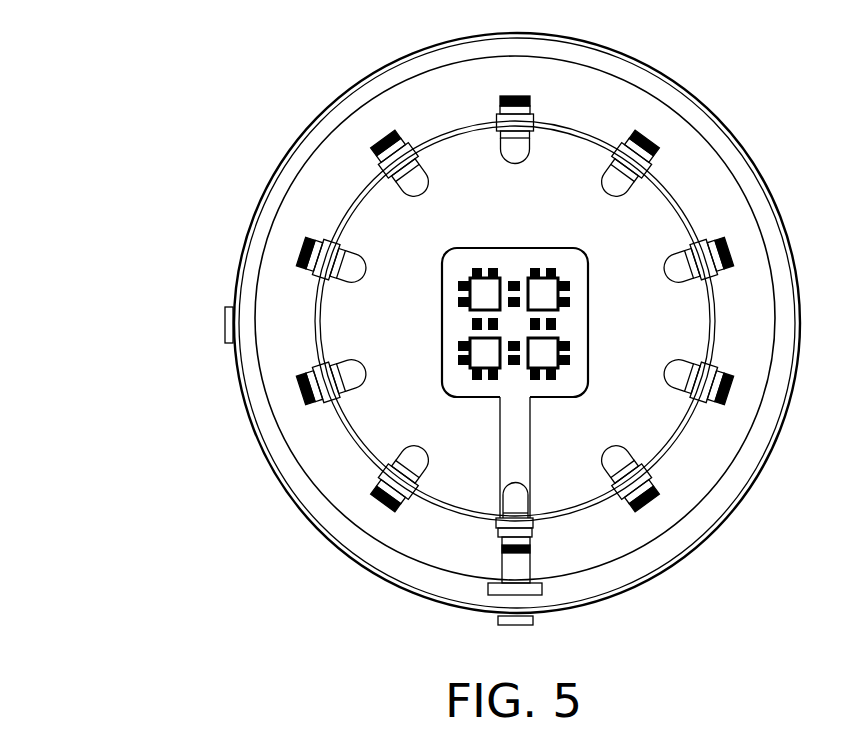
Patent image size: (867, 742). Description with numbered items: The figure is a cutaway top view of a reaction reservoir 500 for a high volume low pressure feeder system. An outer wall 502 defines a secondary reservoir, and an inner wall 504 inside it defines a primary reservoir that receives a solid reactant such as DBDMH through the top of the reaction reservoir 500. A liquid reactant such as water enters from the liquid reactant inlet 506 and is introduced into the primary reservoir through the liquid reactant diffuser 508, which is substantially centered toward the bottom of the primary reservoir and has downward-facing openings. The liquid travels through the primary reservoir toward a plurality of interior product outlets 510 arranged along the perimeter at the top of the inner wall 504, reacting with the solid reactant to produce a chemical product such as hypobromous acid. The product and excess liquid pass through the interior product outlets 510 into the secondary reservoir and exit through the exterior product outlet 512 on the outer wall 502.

The reaction reservoir 500 is at (123, 68).
The outer wall 502 is at (349, 83).
The inner wall 504 is at (348, 203).
The liquid reactant inlet 506 is at (497, 621).
The liquid reactant diffuser 508 is at (460, 260).
The interior product outlets 510 is at (493, 113).
The exterior product outlet 512 is at (224, 325).